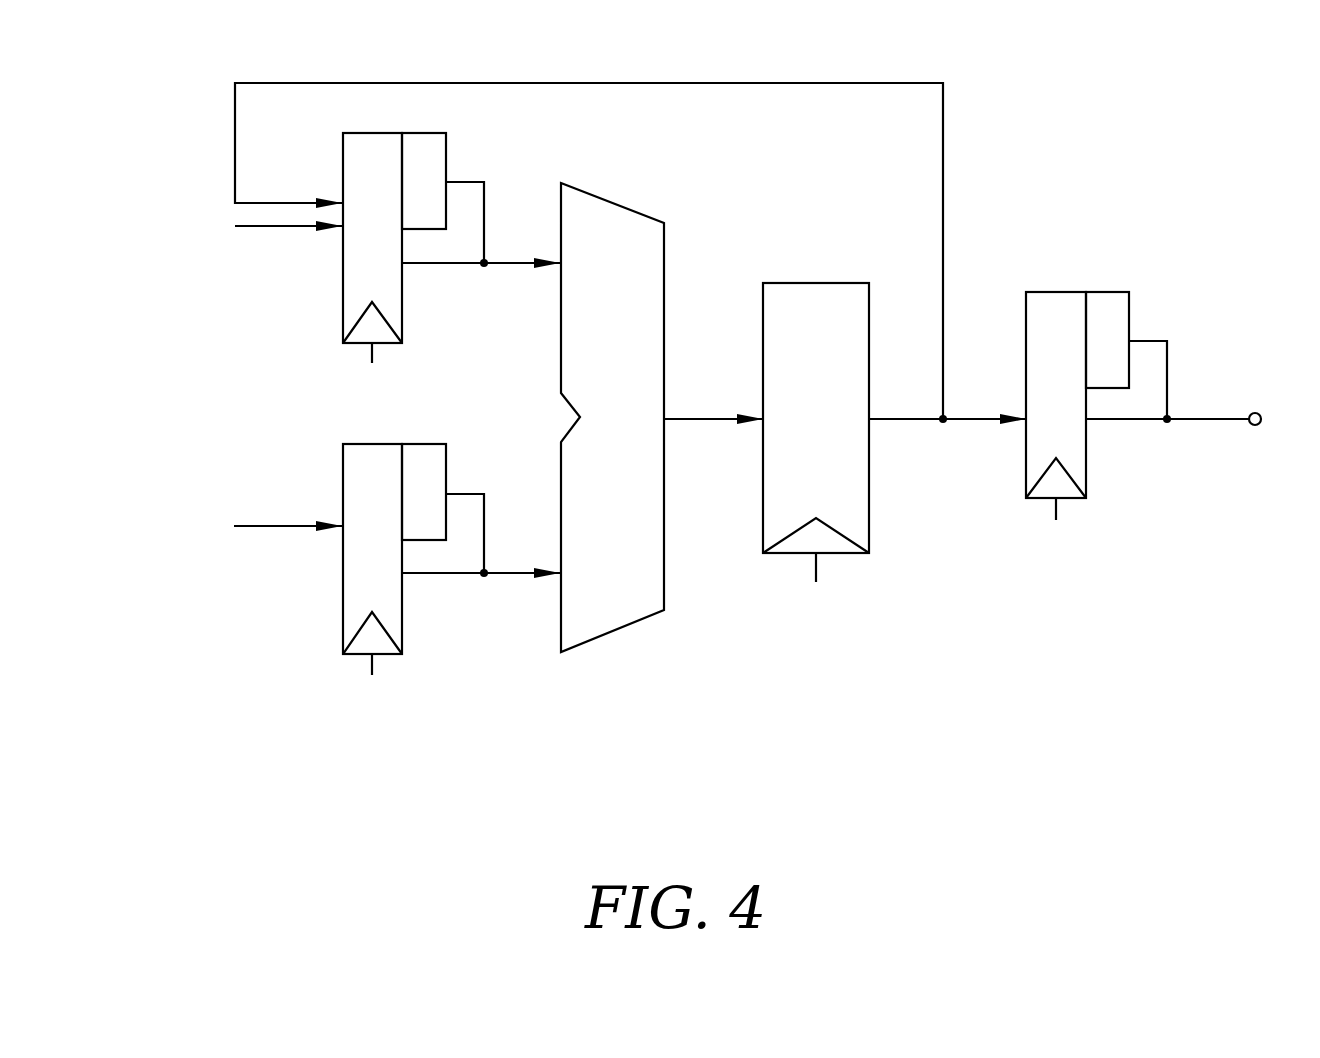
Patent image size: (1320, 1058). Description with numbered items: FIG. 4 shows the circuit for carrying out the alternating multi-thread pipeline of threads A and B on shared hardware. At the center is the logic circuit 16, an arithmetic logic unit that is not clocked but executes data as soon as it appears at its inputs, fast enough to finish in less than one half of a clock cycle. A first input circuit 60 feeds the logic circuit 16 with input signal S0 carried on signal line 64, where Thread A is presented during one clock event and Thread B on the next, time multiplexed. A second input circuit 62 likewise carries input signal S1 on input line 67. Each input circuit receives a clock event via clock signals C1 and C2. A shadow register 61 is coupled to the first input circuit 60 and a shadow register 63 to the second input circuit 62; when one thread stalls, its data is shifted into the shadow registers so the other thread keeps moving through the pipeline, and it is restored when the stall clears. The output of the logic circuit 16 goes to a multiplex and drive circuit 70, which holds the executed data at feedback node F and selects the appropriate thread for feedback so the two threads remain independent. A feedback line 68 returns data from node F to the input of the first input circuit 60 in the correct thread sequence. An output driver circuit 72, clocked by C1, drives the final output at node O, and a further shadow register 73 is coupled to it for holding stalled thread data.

The logic circuit 16 is at (614, 633).
The first input circuit 60 is at (349, 278).
The shadow register 61 is at (434, 145).
The second input circuit 62 is at (369, 598).
The shadow register 63 is at (432, 460).
The signal line 64 is at (252, 226).
The input line 67 is at (275, 525).
The feedback line 68 is at (943, 265).
The multiplex and drive circuit 70 is at (828, 512).
The output driver circuit 72 is at (1072, 447).
The shadow register 73 is at (1120, 308).